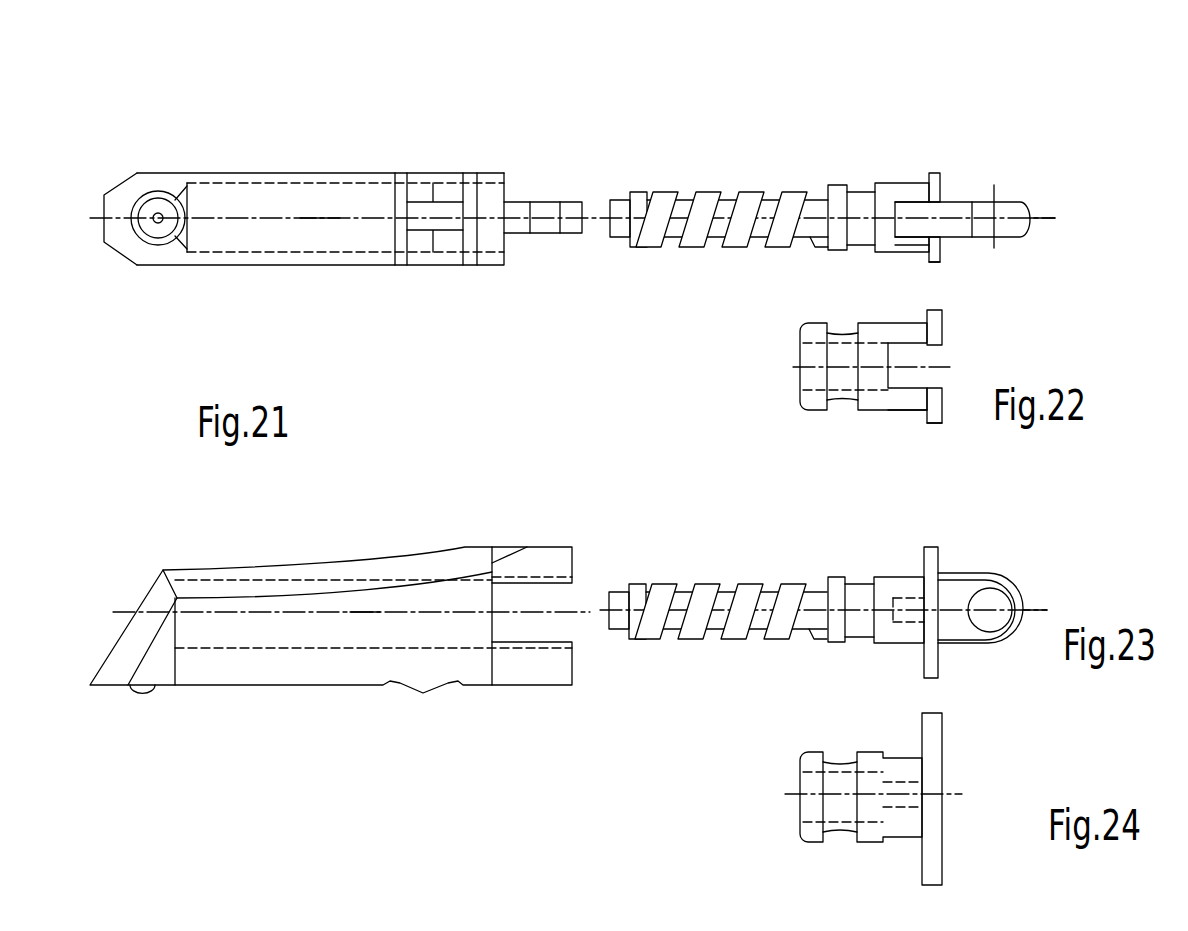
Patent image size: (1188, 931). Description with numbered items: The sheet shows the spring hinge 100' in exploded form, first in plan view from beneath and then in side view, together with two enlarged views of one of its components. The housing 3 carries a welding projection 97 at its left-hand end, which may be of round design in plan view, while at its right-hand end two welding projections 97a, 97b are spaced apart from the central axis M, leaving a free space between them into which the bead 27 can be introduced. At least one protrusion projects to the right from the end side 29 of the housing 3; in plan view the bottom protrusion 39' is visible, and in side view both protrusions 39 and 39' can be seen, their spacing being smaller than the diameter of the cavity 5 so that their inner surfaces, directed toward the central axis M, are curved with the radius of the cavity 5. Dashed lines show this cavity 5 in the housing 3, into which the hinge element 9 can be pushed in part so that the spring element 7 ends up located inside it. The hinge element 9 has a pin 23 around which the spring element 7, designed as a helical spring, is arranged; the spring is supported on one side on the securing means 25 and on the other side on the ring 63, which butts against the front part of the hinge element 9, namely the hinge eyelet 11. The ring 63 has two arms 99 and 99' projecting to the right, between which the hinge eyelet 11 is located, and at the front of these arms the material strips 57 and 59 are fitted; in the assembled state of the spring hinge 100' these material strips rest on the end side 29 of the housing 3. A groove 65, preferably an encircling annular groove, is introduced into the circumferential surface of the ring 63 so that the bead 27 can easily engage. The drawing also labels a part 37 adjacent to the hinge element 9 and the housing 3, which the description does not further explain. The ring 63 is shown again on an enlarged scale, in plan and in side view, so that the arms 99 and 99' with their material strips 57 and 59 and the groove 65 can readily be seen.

In FIG. 21, the housing 3 is at (150, 175).
In FIG. 23, the housing 3 is at (135, 612).
In FIG. 21, the cavity 5 is at (232, 233).
In FIG. 23, the cavity 5 is at (223, 632).
In FIG. 21, the central axis M is at (318, 218).
In FIG. 23, the central axis M is at (365, 612).
In FIG. 21, the spring element 7 is at (718, 178).
In FIG. 23, the spring element 7 is at (710, 574).
In FIG. 21, the hinge element 9 is at (1032, 228).
In FIG. 23, the hinge element 9 is at (965, 564).
In FIG. 21, the hinge eyelet 11 is at (1002, 195).
In FIG. 23, the hinge eyelet 11 is at (1013, 597).
In FIG. 21, the pin 23 is at (722, 228).
In FIG. 23, the pin 23 is at (723, 618).
In FIG. 21, the securing means 25 is at (640, 233).
In FIG. 23, the securing means 25 is at (638, 627).
In FIG. 21, the bead 27 is at (430, 216).
In FIG. 21, the end side 29 is at (513, 247).
In FIG. 21, the stop plate 37 is at (537, 198).
In FIG. 23, the stop plate 37 is at (938, 662).
In FIG. 23, the protrusion 39 is at (532, 526).
In FIG. 21, the bottom protrusion 39' is at (587, 292).
In FIG. 23, the bottom protrusion 39' is at (532, 721).
In FIG. 21, the material strip 57 is at (945, 185).
In FIG. 22, the material strip 57 is at (942, 330).
In FIG. 24, the material strip 57 is at (928, 857).
In FIG. 21, the material strip 59 is at (942, 247).
In FIG. 22, the material strip 59 is at (940, 417).
In FIG. 21, the ring 63 is at (838, 185).
In FIG. 22, the ring 63 is at (800, 410).
In FIG. 23, the ring 63 is at (831, 580).
In FIG. 24, the ring 63 is at (800, 782).
In FIG. 21, the groove 65 is at (862, 190).
In FIG. 22, the groove 65 is at (843, 405).
In FIG. 23, the groove 65 is at (860, 584).
In FIG. 24, the groove 65 is at (840, 762).
In FIG. 21, the welding projection 97 is at (152, 240).
In FIG. 21, the welding projection 97a is at (448, 173).
In FIG. 21, the welding projection 97b is at (447, 252).
In FIG. 21, the arm 99 is at (946, 133).
In FIG. 22, the arm 99 is at (954, 311).
In FIG. 24, the arm 99 is at (876, 830).
In FIG. 21, the arm 99' is at (887, 273).
In FIG. 22, the arm 99' is at (908, 449).
In FIG. 21, the spring hinge 100' is at (320, 105).